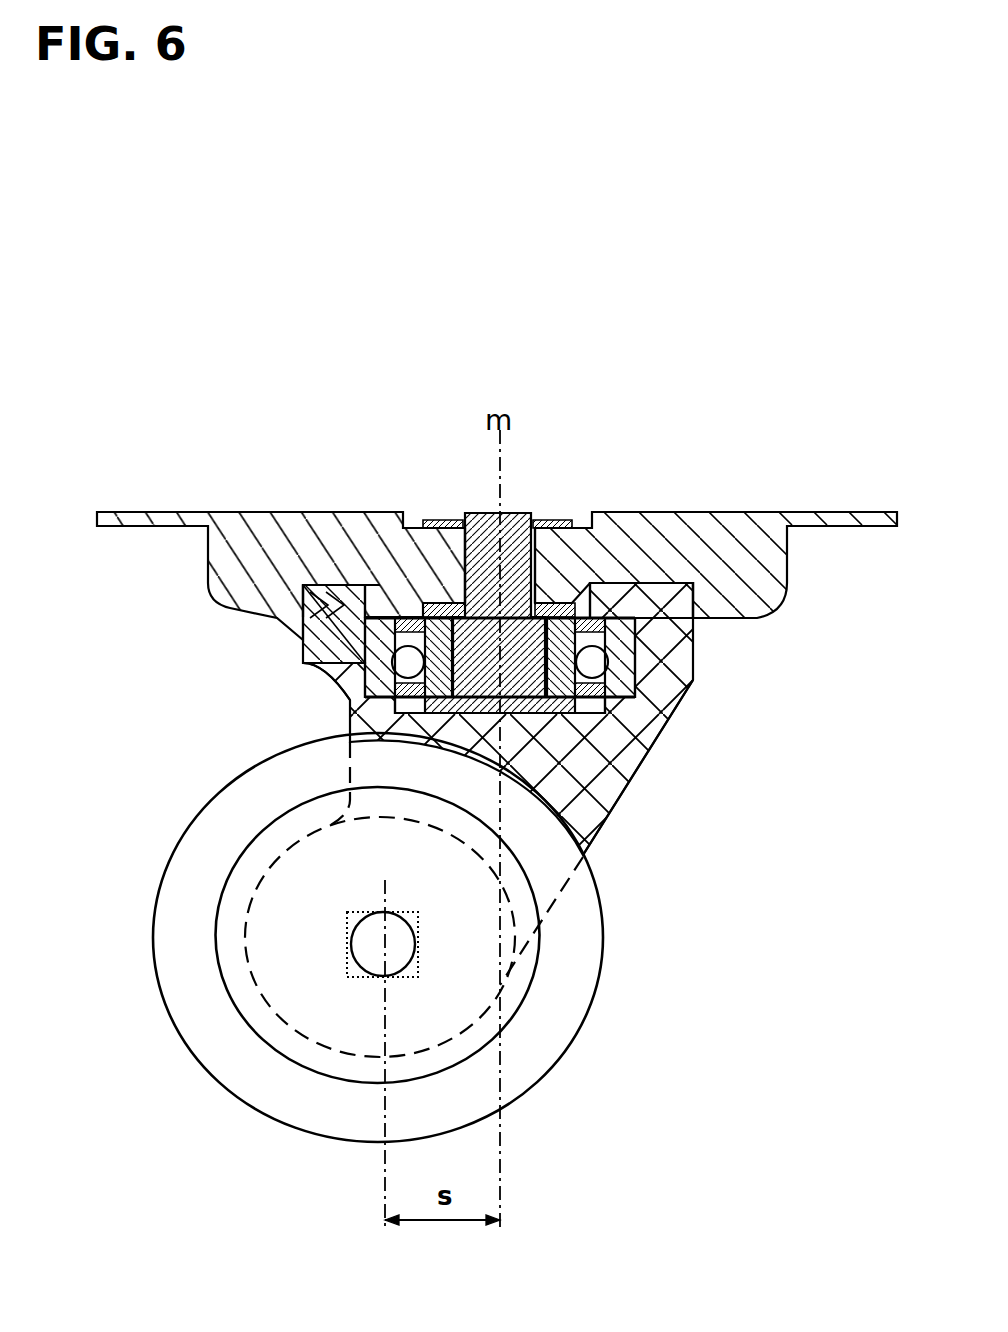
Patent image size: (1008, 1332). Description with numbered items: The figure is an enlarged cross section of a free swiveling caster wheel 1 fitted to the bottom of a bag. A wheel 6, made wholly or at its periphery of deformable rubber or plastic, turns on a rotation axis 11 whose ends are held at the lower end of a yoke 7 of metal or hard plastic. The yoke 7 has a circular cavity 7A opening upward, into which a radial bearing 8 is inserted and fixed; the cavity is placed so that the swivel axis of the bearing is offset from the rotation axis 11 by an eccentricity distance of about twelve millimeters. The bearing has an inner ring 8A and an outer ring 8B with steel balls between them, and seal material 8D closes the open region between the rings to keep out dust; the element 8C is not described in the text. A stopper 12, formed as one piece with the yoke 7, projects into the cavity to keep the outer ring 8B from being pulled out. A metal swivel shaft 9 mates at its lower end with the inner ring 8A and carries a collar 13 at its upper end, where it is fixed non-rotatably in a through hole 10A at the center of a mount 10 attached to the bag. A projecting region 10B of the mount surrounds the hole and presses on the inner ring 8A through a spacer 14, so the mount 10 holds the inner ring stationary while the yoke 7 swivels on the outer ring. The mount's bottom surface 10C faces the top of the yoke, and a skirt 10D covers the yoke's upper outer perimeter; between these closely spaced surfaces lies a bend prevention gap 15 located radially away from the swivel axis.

The free swiveling caster wheel 1 is at (672, 1047).
The wheel 6 is at (263, 1113).
The yoke 7 is at (621, 786).
The circular cavity 7A is at (612, 787).
The radial bearing 8 is at (633, 733).
The inner ring 8A is at (628, 700).
The outer ring 8B is at (605, 658).
The inner ring 8C is at (600, 690).
The seal material 8D is at (619, 711).
The swivel shaft 9 is at (502, 532).
The mount 10 is at (235, 540).
The through hole 10A is at (463, 563).
The projecting region 10B is at (318, 581).
The bottom surface 10C is at (300, 680).
The skirt 10D is at (287, 630).
The rotation axis 11 is at (370, 946).
The stopper 12 is at (592, 582).
The collar 13 is at (552, 525).
The spacer 14 is at (563, 600).
The bend prevention gap 15 is at (299, 600).